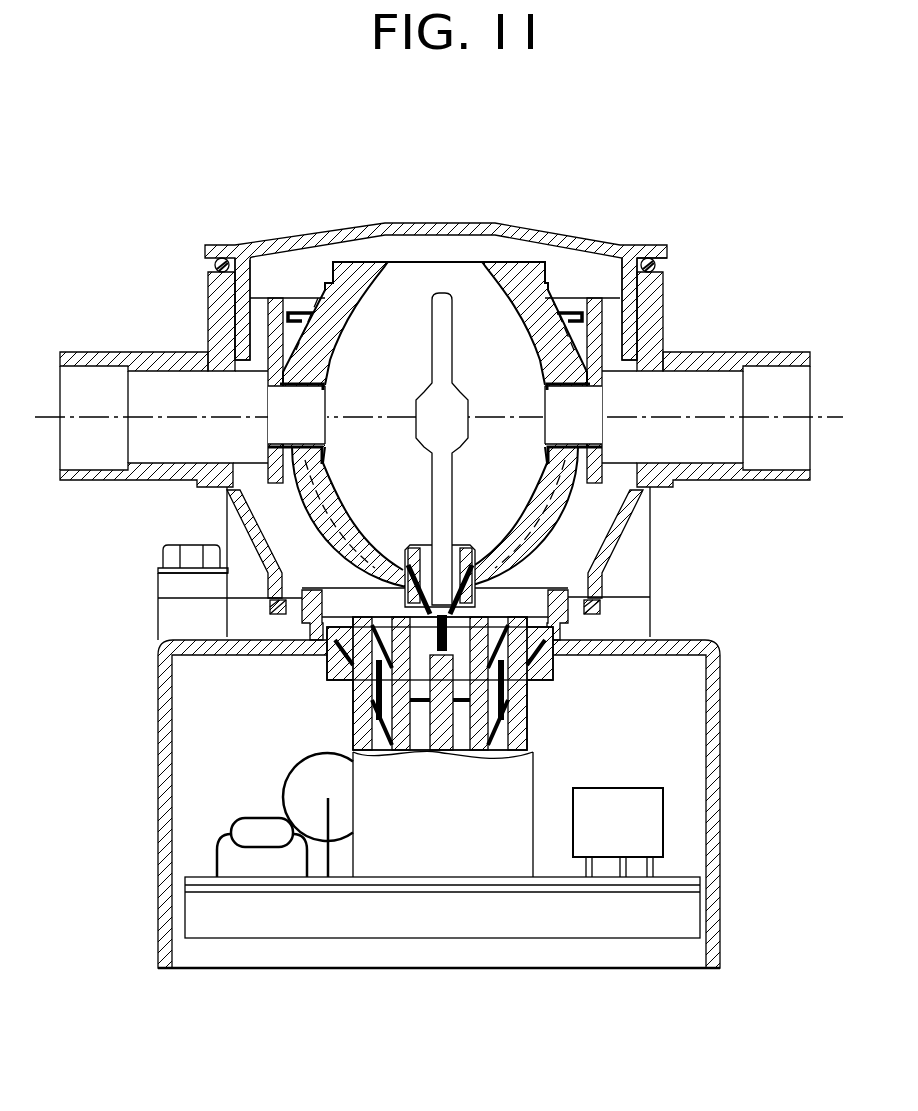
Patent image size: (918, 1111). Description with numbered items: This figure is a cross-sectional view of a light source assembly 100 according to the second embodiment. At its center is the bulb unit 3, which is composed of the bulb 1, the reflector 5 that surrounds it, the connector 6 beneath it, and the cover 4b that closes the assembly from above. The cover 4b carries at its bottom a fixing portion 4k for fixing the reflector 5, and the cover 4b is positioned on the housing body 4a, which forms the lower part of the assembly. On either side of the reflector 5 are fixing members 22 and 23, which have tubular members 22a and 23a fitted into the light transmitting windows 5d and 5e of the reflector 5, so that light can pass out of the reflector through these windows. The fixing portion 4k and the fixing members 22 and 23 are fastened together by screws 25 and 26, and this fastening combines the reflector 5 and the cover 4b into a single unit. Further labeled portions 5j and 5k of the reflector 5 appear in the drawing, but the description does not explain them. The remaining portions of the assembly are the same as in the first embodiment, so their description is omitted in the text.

The light source assembly 100 is at (698, 230).
The bulb 1 is at (461, 397).
The bulb unit 3 is at (505, 221).
The housing body 4a is at (665, 319).
The cover 4b is at (563, 240).
The fixing portion 4k is at (293, 268).
The reflector 5 is at (345, 322).
The light transmitting window 5d is at (310, 427).
The light transmitting window 5e is at (563, 428).
The top shoulder of valve element 5j is at (366, 262).
The top face of valve element 5k is at (440, 262).
The connector 6 is at (516, 601).
The fixing member 22 is at (177, 357).
The tubular member 22a is at (270, 409).
The fixing member 23 is at (682, 363).
The tubular member 23a is at (597, 411).
The screw 25 is at (218, 303).
The screw 26 is at (667, 289).